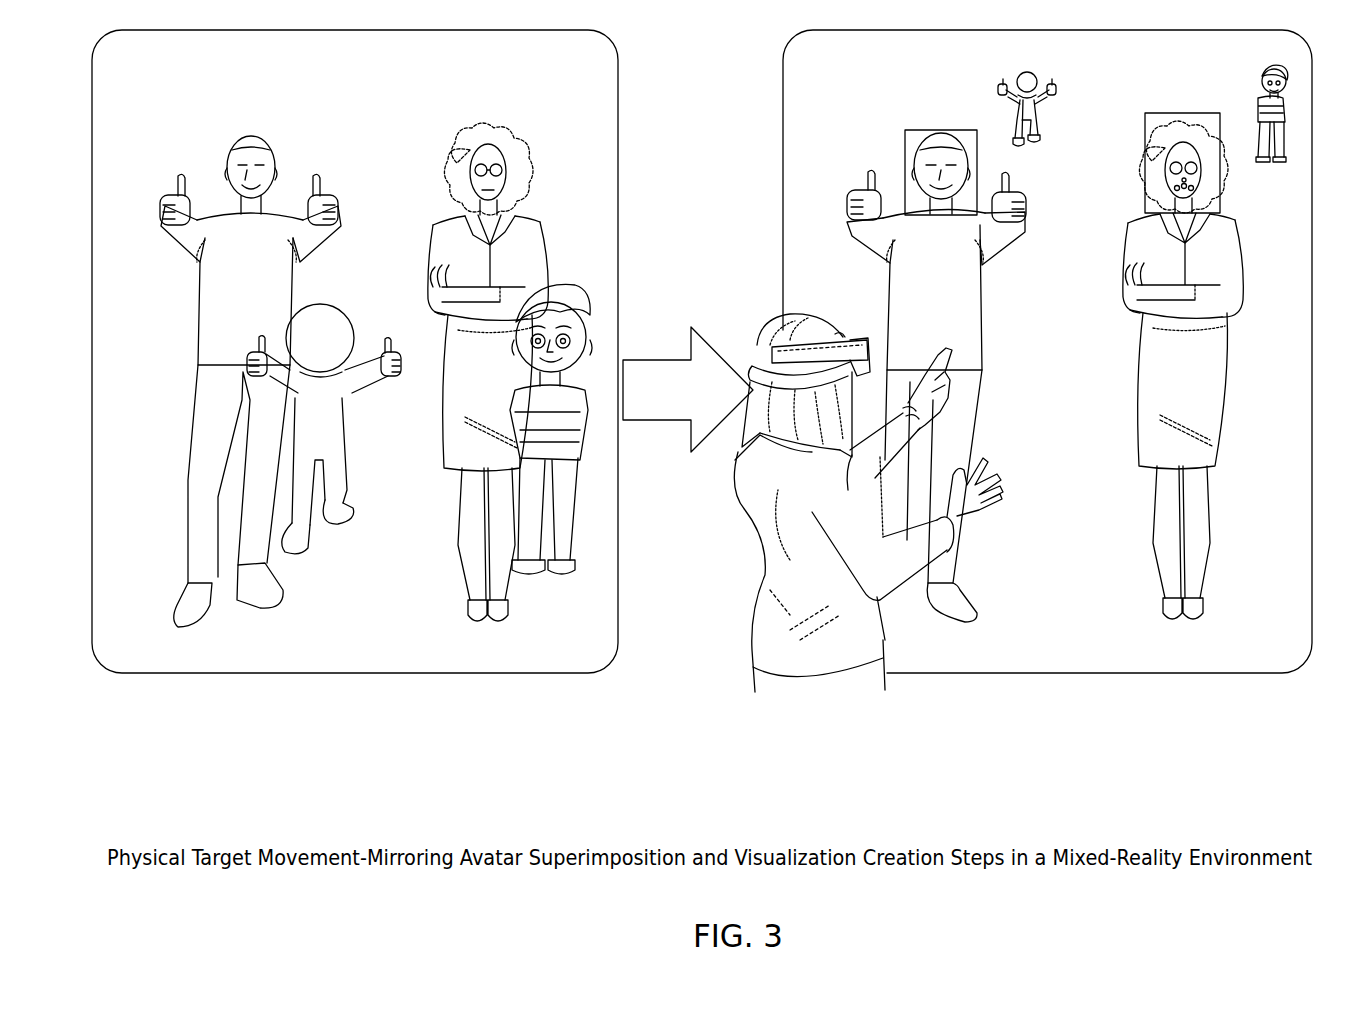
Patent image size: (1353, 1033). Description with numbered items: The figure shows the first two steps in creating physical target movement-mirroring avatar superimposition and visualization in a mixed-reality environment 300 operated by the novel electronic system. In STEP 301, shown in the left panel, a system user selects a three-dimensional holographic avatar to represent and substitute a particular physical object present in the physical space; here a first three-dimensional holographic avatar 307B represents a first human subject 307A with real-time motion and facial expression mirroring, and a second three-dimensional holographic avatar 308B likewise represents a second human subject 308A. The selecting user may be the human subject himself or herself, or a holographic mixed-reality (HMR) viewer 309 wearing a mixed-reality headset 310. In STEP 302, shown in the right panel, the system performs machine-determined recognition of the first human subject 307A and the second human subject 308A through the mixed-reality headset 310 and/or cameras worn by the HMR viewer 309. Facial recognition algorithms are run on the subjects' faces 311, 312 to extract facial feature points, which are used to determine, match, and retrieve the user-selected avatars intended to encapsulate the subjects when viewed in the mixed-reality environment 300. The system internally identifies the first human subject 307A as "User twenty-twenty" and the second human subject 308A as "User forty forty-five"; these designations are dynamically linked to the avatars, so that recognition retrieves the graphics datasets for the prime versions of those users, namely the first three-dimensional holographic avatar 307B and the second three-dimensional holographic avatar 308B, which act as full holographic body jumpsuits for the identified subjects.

The mixed-reality environment 300 is at (753, 785).
The STEP 301 is at (355, 373).
The STEP 302 is at (1047, 373).
The first human subject 307A is at (593, 366).
The first 3D holographic avatar 307B is at (677, 297).
The second human subject 308A is at (835, 350).
The second 3D holographic avatar 308B is at (905, 304).
The holographic mixed-reality (HMR) viewer 309 is at (868, 503).
The mixed-reality headset 310 is at (862, 328).
The face of first human subject 311 is at (930, 182).
The face of second human subject 312 is at (1172, 184).